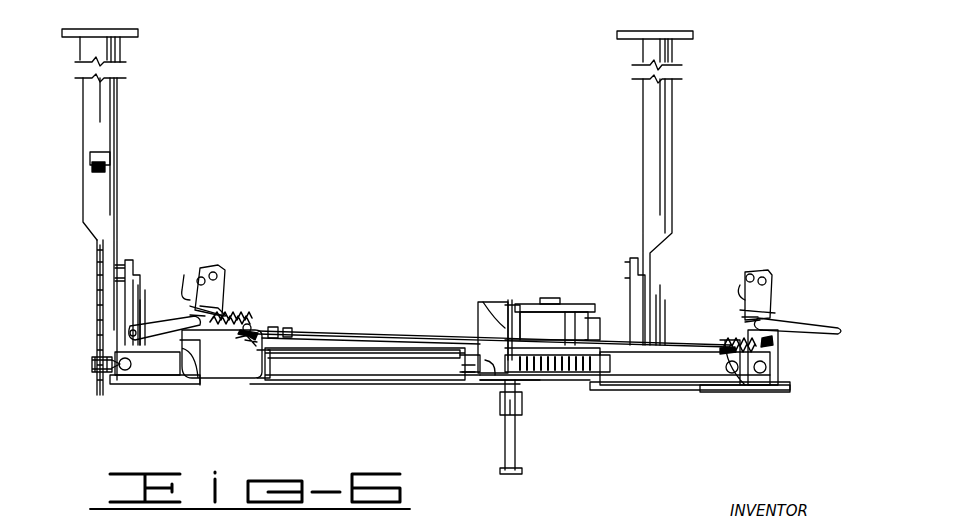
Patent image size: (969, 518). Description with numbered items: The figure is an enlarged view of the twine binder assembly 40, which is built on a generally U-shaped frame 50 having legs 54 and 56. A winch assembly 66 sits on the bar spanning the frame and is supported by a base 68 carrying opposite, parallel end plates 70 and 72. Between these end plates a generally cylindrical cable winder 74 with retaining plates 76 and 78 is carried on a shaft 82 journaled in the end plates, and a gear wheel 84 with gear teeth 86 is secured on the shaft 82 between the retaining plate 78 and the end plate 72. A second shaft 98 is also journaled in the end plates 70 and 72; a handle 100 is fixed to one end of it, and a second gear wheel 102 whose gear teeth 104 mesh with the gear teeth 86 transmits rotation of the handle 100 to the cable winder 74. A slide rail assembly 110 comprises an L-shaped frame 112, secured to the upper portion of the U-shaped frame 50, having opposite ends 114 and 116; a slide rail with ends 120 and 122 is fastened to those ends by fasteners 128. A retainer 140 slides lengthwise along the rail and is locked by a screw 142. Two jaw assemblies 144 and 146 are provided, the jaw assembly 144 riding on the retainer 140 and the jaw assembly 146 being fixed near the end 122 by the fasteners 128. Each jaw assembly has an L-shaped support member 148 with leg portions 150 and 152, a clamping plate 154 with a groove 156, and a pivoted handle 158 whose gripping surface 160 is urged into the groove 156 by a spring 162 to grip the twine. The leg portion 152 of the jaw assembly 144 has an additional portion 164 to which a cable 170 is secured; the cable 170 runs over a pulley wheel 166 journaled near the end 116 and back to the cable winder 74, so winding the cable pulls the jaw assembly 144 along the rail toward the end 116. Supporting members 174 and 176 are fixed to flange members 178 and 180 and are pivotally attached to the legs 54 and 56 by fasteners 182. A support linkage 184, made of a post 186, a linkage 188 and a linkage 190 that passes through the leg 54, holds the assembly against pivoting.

The twine binder assembly 40 is at (292, 388).
The U-shaped frame 50 is at (633, 315).
The leg 54 is at (133, 298).
The leg 56 is at (625, 302).
The winch assembly 66 is at (470, 312).
The base 68 is at (478, 318).
The end plate 70 is at (520, 305).
The end plate 72 is at (560, 385).
The cable winder 74 is at (530, 320).
The retaining plate 76 is at (572, 312).
The retaining plate 78 is at (494, 380).
The shaft 82 is at (552, 298).
The gear wheel 84 is at (582, 372).
The gear teeth 86 is at (592, 362).
The shaft 98 is at (487, 300).
The handle 100 is at (512, 412).
The second gear wheel 102 is at (478, 375).
The gear teeth 104 is at (478, 355).
The slide rail assembly 110 is at (322, 390).
The L-shaped frame 112 is at (125, 383).
The end 114 is at (115, 375).
The end 116 is at (394, 365).
The end 120 is at (110, 370).
The end 122 is at (780, 358).
The fasteners 128 is at (115, 358).
The retainer 140 is at (182, 384).
The screw 142 is at (250, 380).
The jaw assembly 144 is at (266, 285).
The jaw assembly 146 is at (770, 262).
The L-shaped support member 148 is at (222, 272).
The leg portion 150 is at (218, 302).
The leg portion 152 is at (235, 380).
The clamping plate 154 is at (208, 272).
The groove 156 is at (184, 284).
The handle 158 is at (130, 333).
The gripping surface 160 is at (245, 322).
The spring 162 is at (238, 334).
The additional portion 164 is at (270, 350).
The pulley wheel 166 is at (800, 329).
The cable 170 is at (352, 330).
The supporting member 174 is at (110, 97).
The supporting member 176 is at (646, 141).
The flange member 178 is at (138, 36).
The flange member 180 is at (630, 40).
The fasteners 182 is at (150, 246).
The support linkage 184 is at (85, 257).
The post 186 is at (90, 156).
The linkage 188 is at (92, 173).
The linkage 190 is at (92, 370).